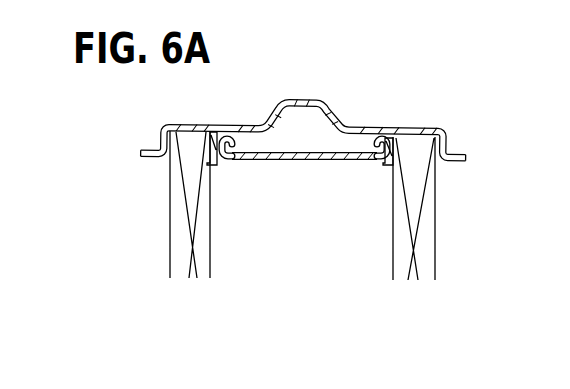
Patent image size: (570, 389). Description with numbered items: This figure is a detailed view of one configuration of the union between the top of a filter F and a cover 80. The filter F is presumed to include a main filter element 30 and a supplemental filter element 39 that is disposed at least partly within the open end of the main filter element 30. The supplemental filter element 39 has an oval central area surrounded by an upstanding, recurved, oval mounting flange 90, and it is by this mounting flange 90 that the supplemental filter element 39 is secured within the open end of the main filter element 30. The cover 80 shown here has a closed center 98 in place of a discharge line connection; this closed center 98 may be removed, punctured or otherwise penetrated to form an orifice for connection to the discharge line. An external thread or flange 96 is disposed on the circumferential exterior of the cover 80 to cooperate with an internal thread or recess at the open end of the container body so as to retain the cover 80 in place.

The cover 80 is at (358, 123).
The closed center 98 is at (319, 100).
The external thread or flange 96 is at (138, 158).
The main filter element 30 is at (436, 243).
The supplemental filter element 39 is at (290, 152).
The mounting flange 90 is at (219, 144).
The filter F is at (167, 233).